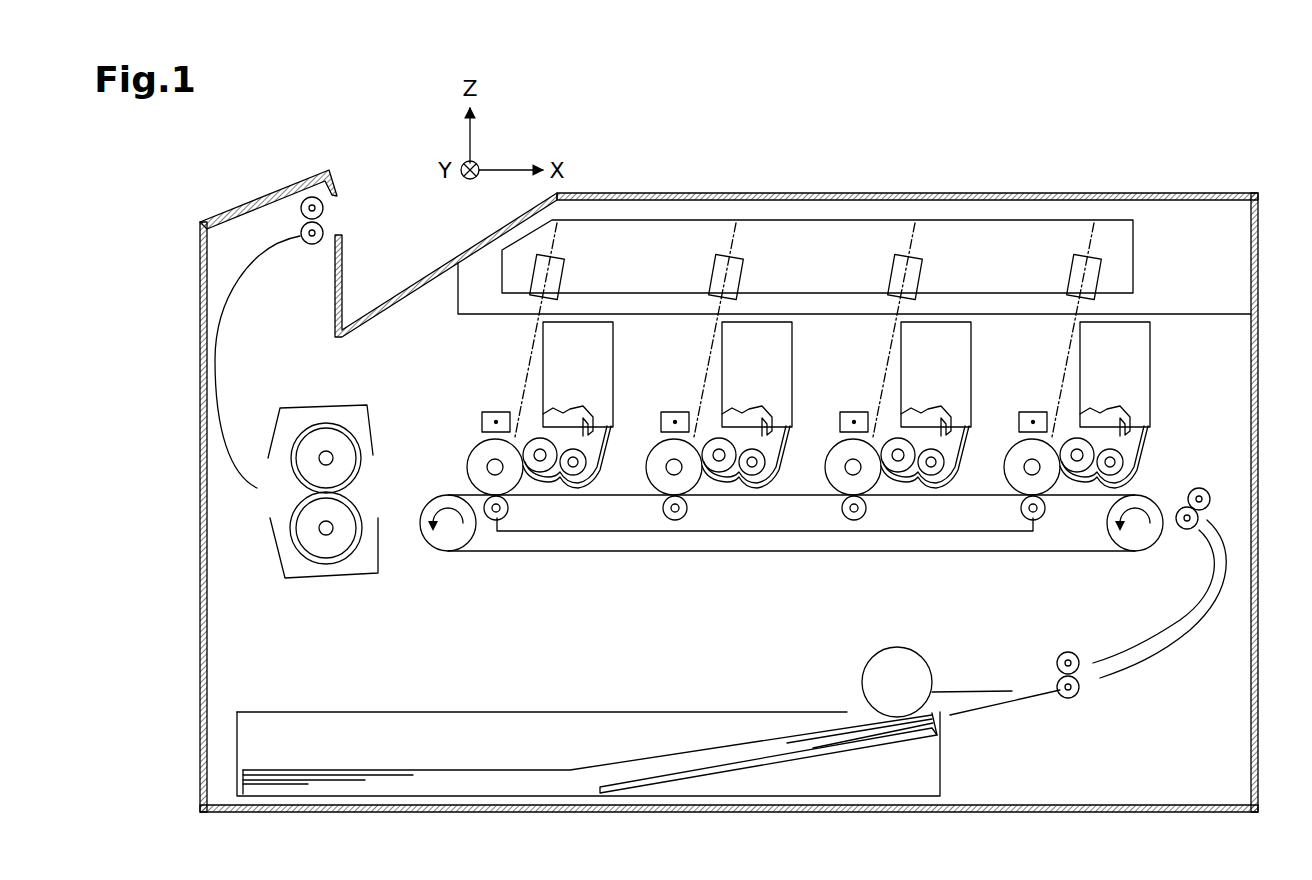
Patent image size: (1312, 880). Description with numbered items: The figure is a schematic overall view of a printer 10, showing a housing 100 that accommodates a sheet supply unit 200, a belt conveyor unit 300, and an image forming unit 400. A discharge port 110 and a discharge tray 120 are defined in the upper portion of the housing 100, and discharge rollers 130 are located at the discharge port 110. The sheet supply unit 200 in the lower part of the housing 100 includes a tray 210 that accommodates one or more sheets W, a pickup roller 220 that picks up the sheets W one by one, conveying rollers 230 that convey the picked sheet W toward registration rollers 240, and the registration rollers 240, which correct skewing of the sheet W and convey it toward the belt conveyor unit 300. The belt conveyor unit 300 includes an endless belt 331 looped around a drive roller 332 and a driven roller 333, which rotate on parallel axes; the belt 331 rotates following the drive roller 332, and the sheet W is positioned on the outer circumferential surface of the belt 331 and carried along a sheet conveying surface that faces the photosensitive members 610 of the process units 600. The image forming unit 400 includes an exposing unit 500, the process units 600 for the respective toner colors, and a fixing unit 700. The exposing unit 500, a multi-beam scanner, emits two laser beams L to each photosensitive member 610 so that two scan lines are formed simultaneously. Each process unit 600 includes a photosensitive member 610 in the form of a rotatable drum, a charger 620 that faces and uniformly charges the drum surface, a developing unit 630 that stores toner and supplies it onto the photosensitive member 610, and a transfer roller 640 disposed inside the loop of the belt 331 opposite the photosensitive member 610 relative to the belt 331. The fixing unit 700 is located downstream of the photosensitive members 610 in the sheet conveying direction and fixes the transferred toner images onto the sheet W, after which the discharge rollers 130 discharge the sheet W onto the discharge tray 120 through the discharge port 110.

The printer 10 is at (1057, 178).
The housing 100 is at (729, 459).
The discharge port 110 is at (339, 191).
The discharge tray 120 is at (430, 268).
The discharge rollers 130 is at (300, 208).
The sheet supply unit 200 is at (689, 750).
The tray 210 is at (943, 752).
The pickup roller 220 is at (900, 700).
The conveying rollers 230 is at (1080, 668).
The registration rollers 240 is at (1199, 526).
The belt conveyor unit 300 is at (785, 575).
The belt 331 is at (608, 553).
The drive roller 332 is at (440, 532).
The driven roller 333 is at (1143, 537).
The image forming unit 400 is at (397, 406).
The exposing unit 500 is at (1135, 238).
The process units 600 is at (844, 454).
The photosensitive member 610 is at (1006, 482).
The charger 620 is at (1009, 419).
The developing unit 630 is at (1136, 447).
The transfer roller 640 is at (1050, 544).
The fixing unit 700 is at (308, 406).
The laser beams L is at (1063, 380).
The sheet W is at (587, 780).